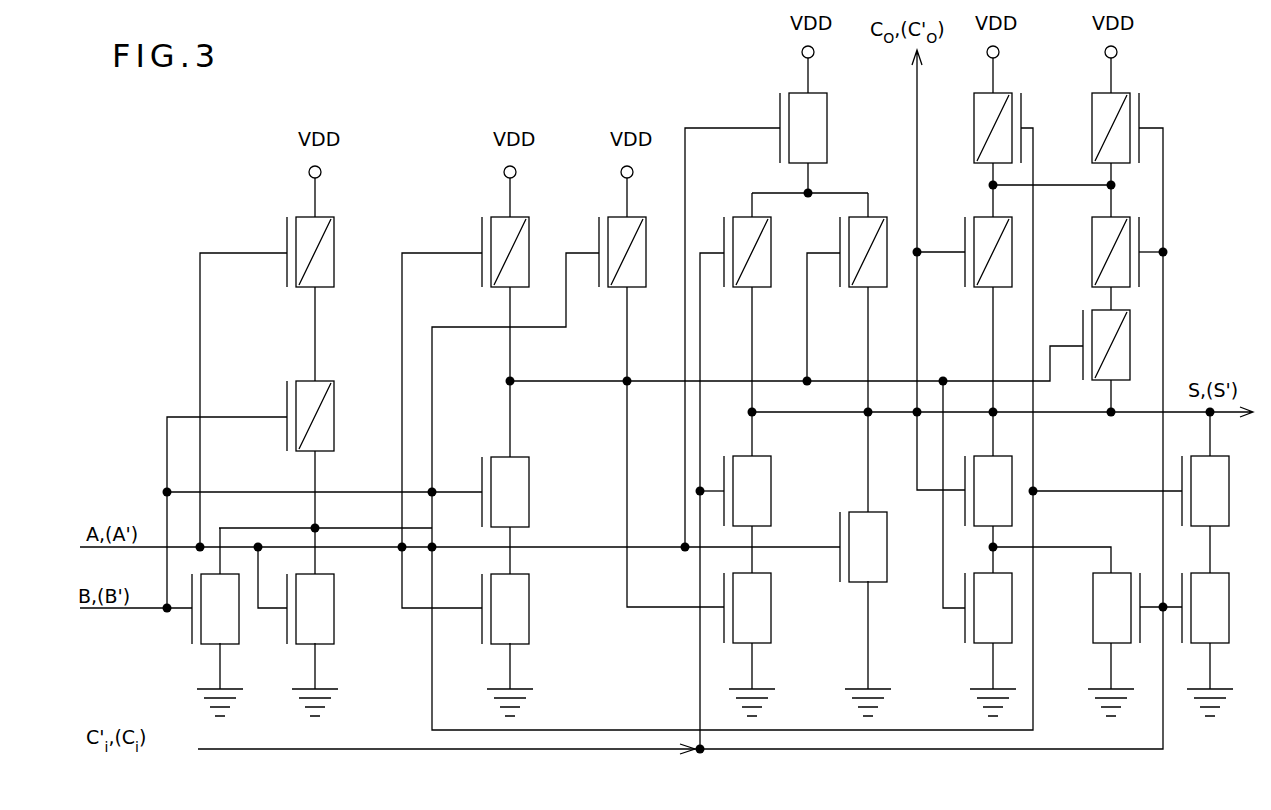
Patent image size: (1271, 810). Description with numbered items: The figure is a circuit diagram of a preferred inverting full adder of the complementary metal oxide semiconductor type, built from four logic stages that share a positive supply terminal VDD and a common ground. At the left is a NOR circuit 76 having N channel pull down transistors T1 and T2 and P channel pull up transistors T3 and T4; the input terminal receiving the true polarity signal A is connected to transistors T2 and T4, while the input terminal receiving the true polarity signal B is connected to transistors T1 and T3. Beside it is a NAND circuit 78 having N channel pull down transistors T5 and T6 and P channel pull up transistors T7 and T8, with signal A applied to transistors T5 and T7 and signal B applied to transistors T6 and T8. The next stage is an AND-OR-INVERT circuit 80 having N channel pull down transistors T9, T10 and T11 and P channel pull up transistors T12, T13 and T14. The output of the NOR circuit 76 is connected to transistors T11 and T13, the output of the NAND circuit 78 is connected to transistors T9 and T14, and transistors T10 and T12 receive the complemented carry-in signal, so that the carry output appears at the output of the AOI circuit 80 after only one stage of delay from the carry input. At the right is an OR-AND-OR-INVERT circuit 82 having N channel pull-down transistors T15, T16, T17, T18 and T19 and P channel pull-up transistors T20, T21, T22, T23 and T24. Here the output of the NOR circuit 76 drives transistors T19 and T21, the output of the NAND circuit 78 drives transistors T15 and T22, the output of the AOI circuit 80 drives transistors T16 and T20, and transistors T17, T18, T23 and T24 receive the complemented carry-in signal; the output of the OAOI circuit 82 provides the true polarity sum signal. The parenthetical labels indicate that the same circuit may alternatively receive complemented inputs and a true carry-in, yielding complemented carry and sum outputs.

The NOR circuit 76 is at (243, 228).
The NAND circuit 78 is at (438, 215).
The AND-OR-INVERT circuit 80 is at (728, 85).
The OR-AND-OR-INVERT circuit 82 is at (1190, 138).
The N channel pull down transistor T1 is at (217, 648).
The N channel pull down transistor T2 is at (320, 597).
The P channel pull up transistor T3 is at (327, 422).
The P channel pull up transistor T4 is at (323, 263).
The N channel pull down transistor T5 is at (510, 608).
The N channel pull down transistor T6 is at (510, 473).
The P channel pull up transistor T7 is at (518, 267).
The P channel pull up transistor T8 is at (625, 265).
The N channel pull down transistor T9 is at (752, 607).
The N channel pull down transistor T10 is at (756, 480).
The N channel pull down transistor T11 is at (880, 552).
The P channel pull up transistor T12 is at (748, 230).
The P channel pull up transistor T13 is at (815, 122).
The P channel pull up transistor T14 is at (878, 230).
The N channel pull-down transistor T15 is at (990, 633).
The N channel pull-down transistor T16 is at (1015, 485).
The N channel pull-down transistor T17 is at (1105, 596).
The N channel pull-down transistor T18 is at (1213, 611).
The N channel pull-down transistor T19 is at (1205, 507).
The P channel pull-up transistor T20 is at (985, 235).
The P channel pull-up transistor T21 is at (1001, 100).
The P channel pull-up transistor T22 is at (1116, 358).
The P channel pull-up transistor T23 is at (1100, 228).
The P channel pull-up transistor T24 is at (1107, 121).